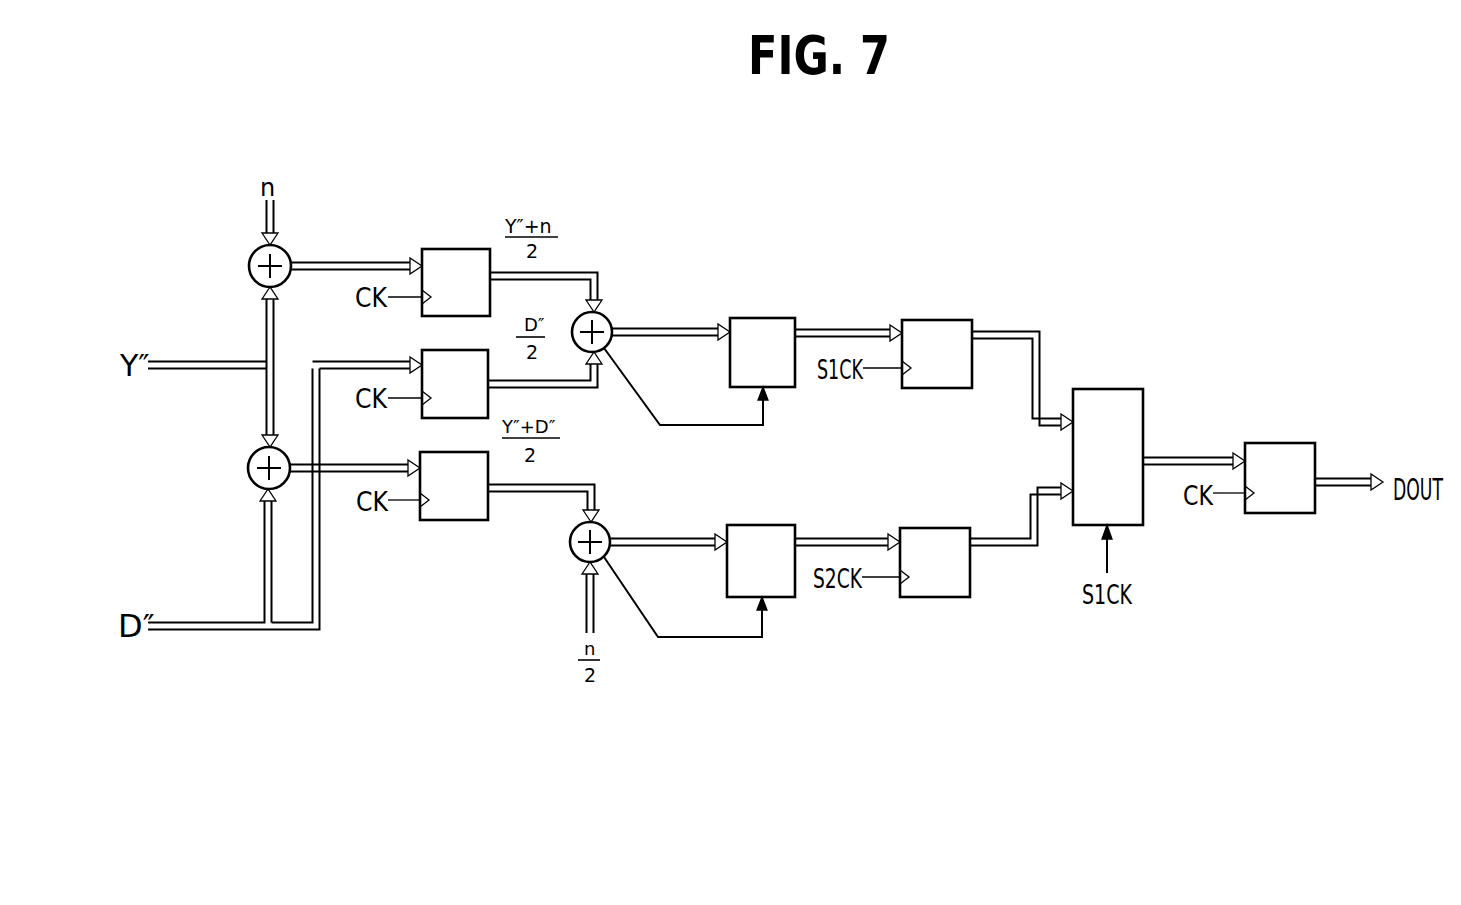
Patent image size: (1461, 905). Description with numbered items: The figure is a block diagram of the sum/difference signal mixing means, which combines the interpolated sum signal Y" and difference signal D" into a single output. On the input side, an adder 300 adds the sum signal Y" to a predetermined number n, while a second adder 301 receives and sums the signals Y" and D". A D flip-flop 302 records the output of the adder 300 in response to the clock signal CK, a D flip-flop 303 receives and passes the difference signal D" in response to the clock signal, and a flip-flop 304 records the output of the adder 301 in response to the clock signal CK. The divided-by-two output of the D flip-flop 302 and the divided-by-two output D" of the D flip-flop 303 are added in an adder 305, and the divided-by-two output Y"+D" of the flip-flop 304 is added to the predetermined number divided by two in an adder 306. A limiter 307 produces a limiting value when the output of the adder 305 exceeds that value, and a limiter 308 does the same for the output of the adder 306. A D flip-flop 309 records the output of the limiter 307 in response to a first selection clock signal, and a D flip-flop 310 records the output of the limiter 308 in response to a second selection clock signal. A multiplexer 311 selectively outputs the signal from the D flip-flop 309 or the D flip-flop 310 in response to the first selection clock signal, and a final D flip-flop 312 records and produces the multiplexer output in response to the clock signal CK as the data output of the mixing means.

The adder 300 is at (250, 266).
The adder 301 is at (248, 470).
The D flip-flop 302 is at (447, 249).
The D flip-flop 303 is at (447, 350).
The flip-flop 304 is at (422, 522).
The adder 305 is at (608, 316).
The adder 306 is at (608, 522).
The limiter 307 is at (748, 318).
The limiter 308 is at (747, 525).
The D flip-flop 309 is at (940, 320).
The D flip-flop 310 is at (937, 528).
The multiplexer 311 is at (1113, 368).
The D flip-flop 312 is at (1290, 443).